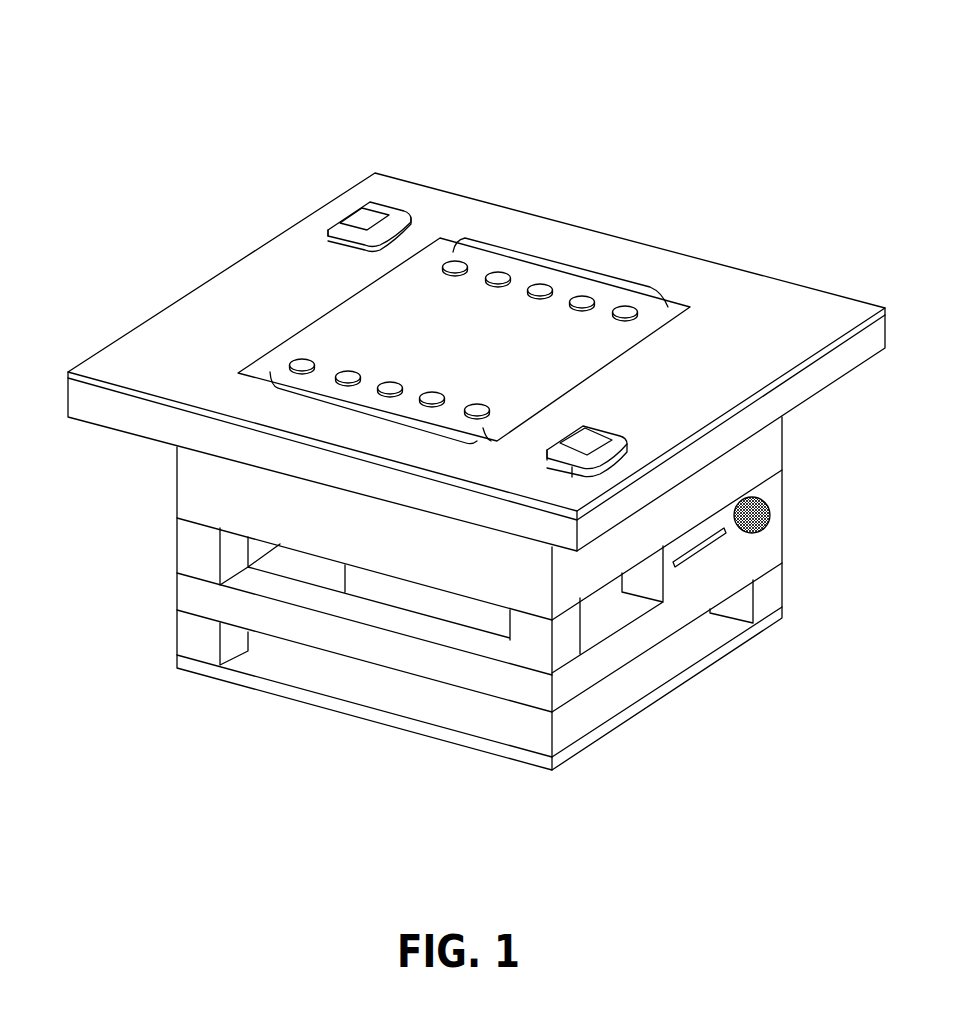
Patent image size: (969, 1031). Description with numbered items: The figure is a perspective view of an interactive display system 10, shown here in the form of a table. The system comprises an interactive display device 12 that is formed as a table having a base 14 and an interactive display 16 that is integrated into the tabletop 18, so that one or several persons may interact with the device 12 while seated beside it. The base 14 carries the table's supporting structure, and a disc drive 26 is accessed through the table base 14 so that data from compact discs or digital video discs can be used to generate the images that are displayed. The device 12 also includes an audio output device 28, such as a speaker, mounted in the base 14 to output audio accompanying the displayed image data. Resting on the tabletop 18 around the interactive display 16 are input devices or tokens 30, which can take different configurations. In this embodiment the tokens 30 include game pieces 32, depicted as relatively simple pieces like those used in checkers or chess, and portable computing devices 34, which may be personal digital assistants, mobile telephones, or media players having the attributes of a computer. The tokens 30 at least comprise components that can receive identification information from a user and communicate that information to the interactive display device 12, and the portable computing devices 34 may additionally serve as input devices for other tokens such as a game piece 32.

The interactive display system 10 is at (718, 87).
The interactive display device 12 is at (130, 218).
The base 14 is at (142, 583).
The interactive display 16 is at (247, 280).
The tabletop 18 is at (138, 420).
The disc drive 26 is at (724, 533).
The audio output device 28 is at (772, 512).
The tokens 30 is at (330, 212).
The game pieces 32 is at (309, 364).
The portable computing devices 34 is at (393, 207).